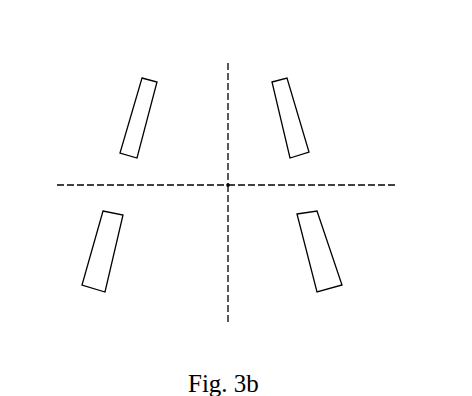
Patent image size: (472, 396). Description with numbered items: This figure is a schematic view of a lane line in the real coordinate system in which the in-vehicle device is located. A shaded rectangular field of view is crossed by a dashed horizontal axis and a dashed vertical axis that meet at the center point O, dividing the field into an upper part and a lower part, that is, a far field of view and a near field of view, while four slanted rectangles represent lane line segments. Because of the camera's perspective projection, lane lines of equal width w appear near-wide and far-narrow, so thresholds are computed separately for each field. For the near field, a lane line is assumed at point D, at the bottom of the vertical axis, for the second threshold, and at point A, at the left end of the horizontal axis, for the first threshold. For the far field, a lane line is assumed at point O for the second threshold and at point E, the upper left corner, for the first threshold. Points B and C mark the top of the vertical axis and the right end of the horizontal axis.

The point A is at (129, 185).
The top end of vertical axis B is at (228, 116).
The right end of horizontal axis C is at (324, 187).
The point D is at (228, 264).
The point E is at (105, 103).
The point O is at (238, 194).